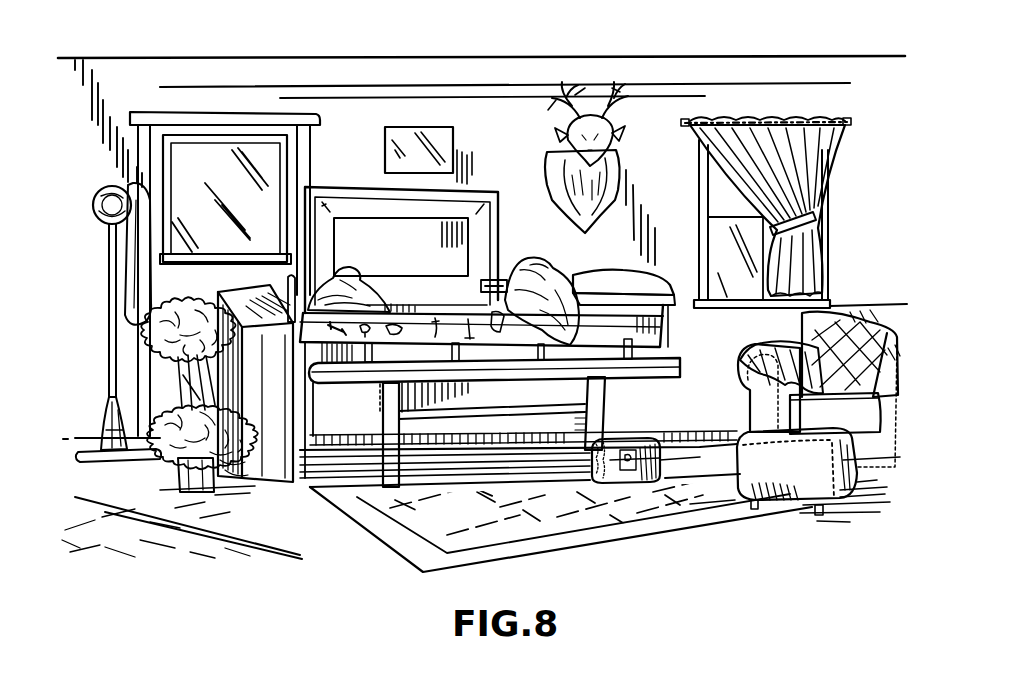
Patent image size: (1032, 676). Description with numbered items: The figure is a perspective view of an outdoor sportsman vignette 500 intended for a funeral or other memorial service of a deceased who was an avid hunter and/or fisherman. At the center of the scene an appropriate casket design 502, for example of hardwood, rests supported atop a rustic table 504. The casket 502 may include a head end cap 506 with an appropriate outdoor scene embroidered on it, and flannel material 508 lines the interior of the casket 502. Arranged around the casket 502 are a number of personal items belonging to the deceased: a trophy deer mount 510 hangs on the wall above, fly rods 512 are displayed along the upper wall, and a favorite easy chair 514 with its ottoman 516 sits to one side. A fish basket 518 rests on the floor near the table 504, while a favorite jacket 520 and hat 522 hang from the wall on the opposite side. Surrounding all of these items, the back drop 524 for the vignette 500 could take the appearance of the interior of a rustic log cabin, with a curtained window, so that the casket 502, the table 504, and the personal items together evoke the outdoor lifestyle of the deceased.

The vignette 500 is at (325, 593).
The casket design 502 is at (668, 333).
The rustic table 504 is at (383, 478).
The head end cap 506 is at (354, 238).
The flannel material 508 is at (420, 327).
The trophy deer mount 510 is at (620, 166).
The fly rods 512 is at (326, 94).
The favorite easy chair 514 is at (765, 418).
The ottoman 516 is at (795, 479).
The fish basket 518 is at (612, 483).
The favorite jacket 520 is at (128, 238).
The hat 522 is at (95, 194).
The back drop 524 is at (766, 97).